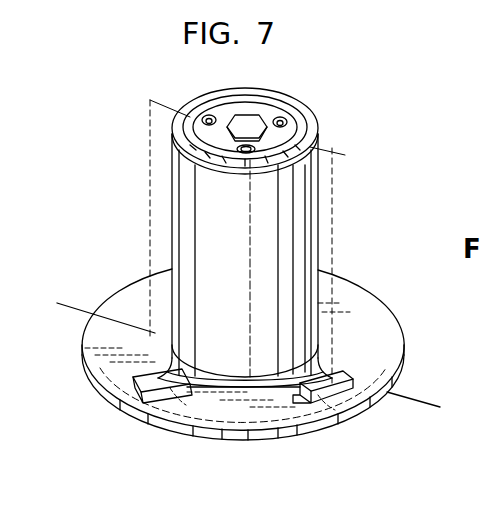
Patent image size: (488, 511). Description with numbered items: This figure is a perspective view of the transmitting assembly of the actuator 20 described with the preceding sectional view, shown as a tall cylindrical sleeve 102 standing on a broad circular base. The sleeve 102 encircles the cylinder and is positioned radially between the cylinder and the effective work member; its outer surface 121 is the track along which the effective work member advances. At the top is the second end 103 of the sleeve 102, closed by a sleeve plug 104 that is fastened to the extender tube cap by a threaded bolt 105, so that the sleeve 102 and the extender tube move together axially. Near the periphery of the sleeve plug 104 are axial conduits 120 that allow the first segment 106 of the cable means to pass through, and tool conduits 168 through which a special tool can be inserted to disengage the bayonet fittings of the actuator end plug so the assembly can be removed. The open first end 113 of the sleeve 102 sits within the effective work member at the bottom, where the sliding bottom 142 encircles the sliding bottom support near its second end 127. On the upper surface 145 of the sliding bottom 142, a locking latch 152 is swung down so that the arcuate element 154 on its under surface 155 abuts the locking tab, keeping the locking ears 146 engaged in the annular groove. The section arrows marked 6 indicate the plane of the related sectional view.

The section line 6- 6 is at (66, 312).
The actuator 20 is at (356, 221).
The cylindrical sleeve 102 is at (222, 260).
The second end of the sleeve 103 is at (200, 160).
The sleeve plug 104 is at (231, 103).
The threaded bolt 105 is at (256, 120).
The first segment of the cable means 106 is at (180, 250).
The first end of the sleeve 113 is at (222, 437).
The axial conduits 120 is at (250, 112).
The outer surface of the sleeve 121 is at (170, 230).
The second end of the sliding bottom support 127 is at (318, 347).
The sliding bottom 142 is at (152, 433).
The upper surface of the sliding bottom 145 is at (392, 331).
The locking ears 146 is at (193, 438).
The locking latch 152 is at (170, 370).
The arcuate element 154 is at (126, 410).
The under surface of the locking latch 155 is at (398, 365).
The tool conduits 168 is at (208, 115).